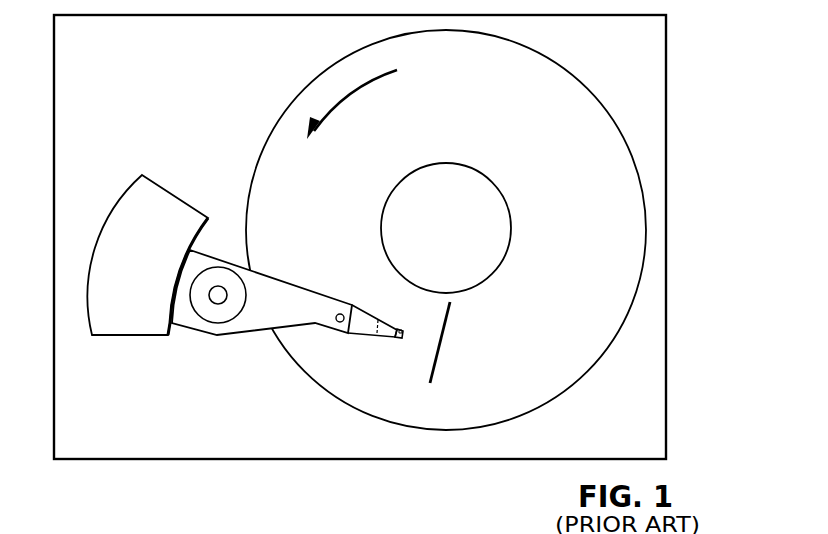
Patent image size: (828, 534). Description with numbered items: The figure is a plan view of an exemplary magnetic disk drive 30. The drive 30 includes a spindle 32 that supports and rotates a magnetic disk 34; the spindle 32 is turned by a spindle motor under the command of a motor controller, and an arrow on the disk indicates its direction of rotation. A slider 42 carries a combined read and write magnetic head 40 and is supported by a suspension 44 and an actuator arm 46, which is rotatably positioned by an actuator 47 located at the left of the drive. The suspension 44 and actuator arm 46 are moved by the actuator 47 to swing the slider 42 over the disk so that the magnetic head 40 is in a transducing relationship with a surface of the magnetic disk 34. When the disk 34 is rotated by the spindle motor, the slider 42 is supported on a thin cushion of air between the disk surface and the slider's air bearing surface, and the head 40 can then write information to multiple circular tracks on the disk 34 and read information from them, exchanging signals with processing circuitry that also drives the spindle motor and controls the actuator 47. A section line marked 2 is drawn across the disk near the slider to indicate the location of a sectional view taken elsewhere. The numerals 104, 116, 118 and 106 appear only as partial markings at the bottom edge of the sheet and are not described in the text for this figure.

The magnetic disk drive 30 is at (683, 52).
The spindle 32 is at (492, 180).
The magnetic disk 34 is at (590, 250).
The magnetic head 40 is at (403, 339).
The slider 42 is at (403, 328).
The suspension 44 is at (362, 337).
The actuator arm 46 is at (307, 293).
The actuator 47 is at (180, 207).
The section line 2- 2 is at (452, 309).
The partially visible numeral from adjacent figure 104 is at (62, 521).
The partially visible numeral from adjacent figure 116 is at (117, 521).
The partially visible numeral from adjacent figure 118 is at (201, 520).
The partially visible numeral from adjacent figure 106 is at (252, 520).